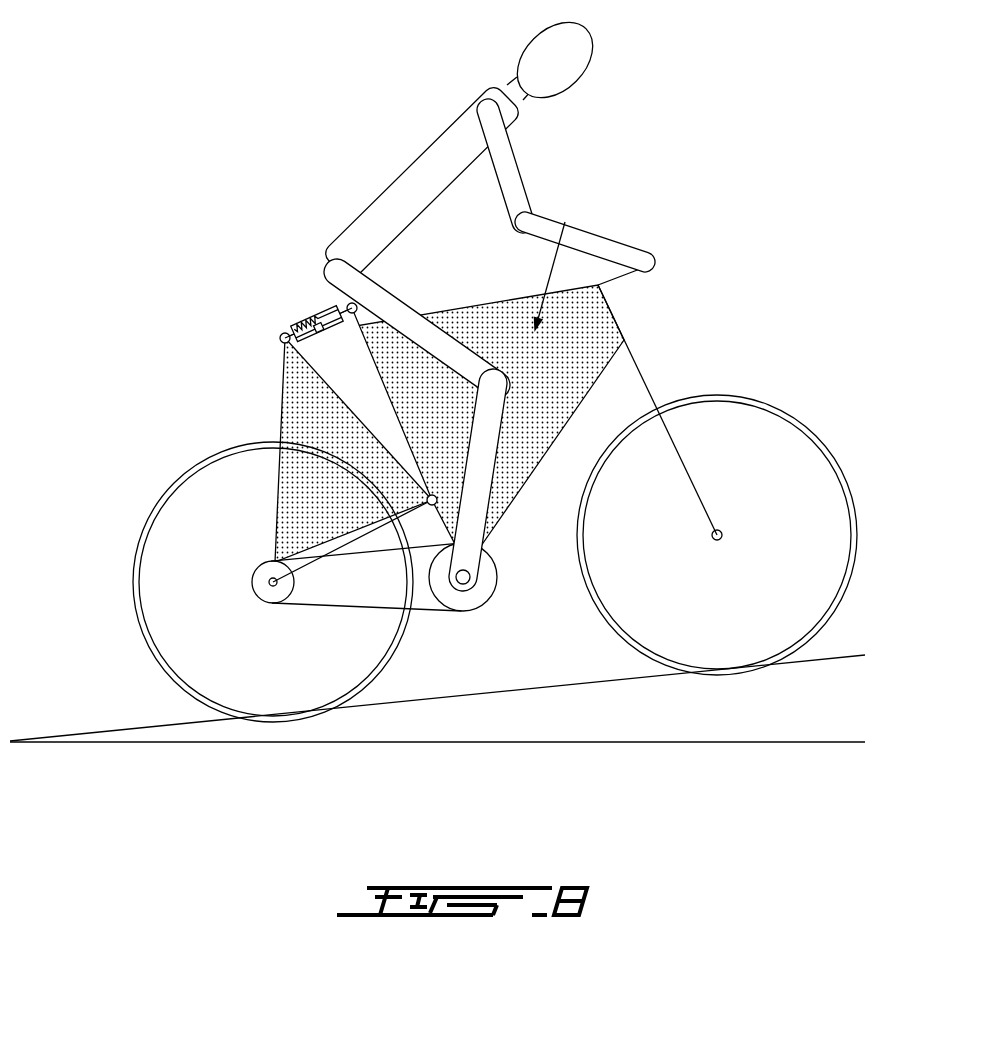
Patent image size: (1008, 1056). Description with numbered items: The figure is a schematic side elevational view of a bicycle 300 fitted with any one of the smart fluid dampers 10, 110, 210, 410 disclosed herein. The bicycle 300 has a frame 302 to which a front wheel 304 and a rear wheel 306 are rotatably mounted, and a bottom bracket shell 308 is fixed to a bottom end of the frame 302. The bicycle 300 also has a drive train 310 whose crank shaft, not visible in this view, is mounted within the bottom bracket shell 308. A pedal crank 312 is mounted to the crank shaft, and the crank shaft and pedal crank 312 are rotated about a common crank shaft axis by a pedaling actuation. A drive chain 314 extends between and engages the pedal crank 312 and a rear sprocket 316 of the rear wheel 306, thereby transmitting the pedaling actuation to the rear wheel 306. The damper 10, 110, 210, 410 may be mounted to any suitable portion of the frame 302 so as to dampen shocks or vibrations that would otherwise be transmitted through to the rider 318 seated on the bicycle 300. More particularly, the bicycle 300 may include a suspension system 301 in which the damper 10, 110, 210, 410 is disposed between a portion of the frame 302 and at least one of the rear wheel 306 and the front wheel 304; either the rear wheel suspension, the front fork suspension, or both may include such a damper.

The damper 10 is at (244, 249).
The damper 110 is at (244, 249).
The damper 210 is at (244, 249).
The damper 410 is at (294, 300).
The bicycle 300 is at (818, 350).
The suspension system 301 is at (262, 340).
The frame 302 is at (607, 371).
The front wheel 304 is at (847, 587).
The rear wheel 306 is at (163, 497).
The bottom bracket shell 308 is at (470, 578).
The drive train 310 is at (425, 612).
The pedal crank 312 is at (480, 611).
The drive chain 314 is at (347, 607).
The rear sprocket 316 is at (273, 586).
The rider 318 is at (430, 173).